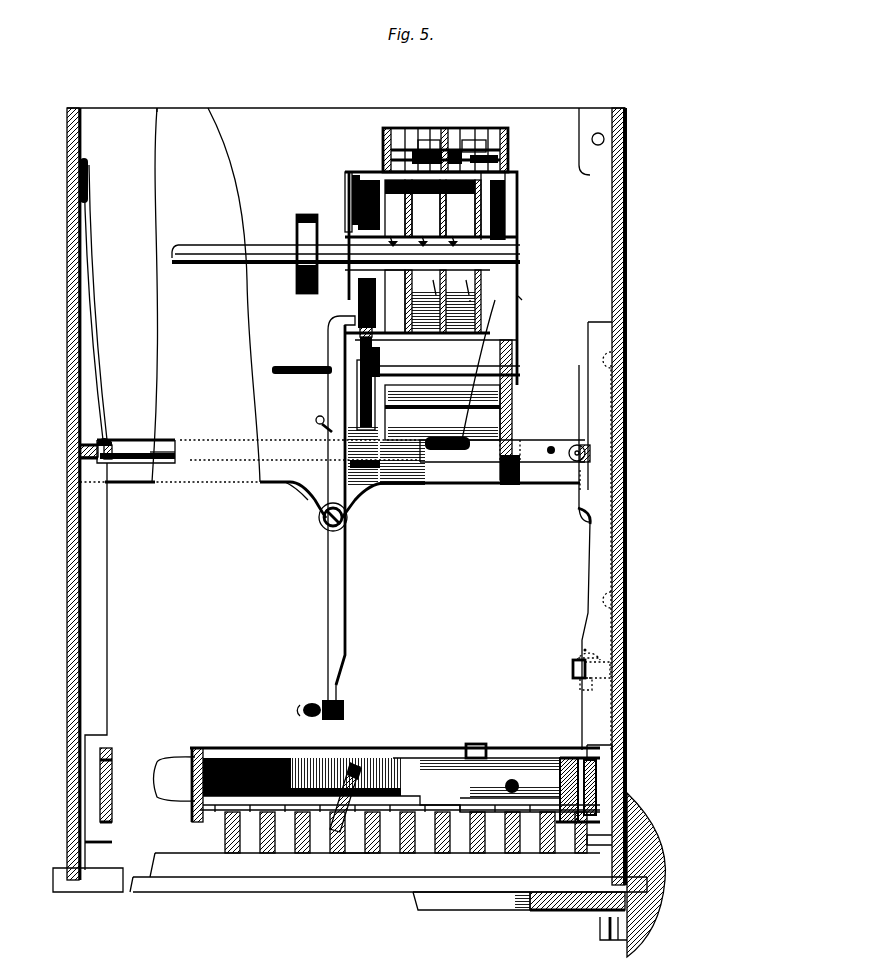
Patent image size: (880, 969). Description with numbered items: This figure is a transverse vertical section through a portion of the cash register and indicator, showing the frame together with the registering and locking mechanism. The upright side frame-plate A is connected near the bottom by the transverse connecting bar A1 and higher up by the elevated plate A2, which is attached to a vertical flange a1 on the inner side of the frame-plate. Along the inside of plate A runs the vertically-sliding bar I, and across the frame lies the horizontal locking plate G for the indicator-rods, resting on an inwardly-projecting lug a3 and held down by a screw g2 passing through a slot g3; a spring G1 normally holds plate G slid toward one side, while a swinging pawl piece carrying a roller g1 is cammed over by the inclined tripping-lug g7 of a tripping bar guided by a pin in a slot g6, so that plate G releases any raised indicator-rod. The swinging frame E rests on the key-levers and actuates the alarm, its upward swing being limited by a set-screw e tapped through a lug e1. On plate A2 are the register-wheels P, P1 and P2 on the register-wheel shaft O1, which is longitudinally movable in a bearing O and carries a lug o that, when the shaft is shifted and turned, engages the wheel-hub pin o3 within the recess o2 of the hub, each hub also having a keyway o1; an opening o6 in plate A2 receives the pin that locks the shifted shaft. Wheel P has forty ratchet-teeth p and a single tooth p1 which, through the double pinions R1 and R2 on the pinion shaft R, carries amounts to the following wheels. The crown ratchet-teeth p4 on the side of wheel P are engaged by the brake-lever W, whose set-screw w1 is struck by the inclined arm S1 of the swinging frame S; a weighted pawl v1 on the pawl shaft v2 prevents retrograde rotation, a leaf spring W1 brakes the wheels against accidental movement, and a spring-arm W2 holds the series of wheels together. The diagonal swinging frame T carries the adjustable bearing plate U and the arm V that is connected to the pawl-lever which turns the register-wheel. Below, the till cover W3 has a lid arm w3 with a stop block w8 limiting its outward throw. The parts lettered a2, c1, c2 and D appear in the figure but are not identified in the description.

The side frame-plate A is at (635, 676).
The transverse connecting bar A1 is at (350, 880).
The elevated plate A2 is at (234, 140).
The vertically-sliding bar I is at (100, 592).
The spring G1 is at (97, 332).
The locking plate G is at (162, 442).
The roller g1 is at (158, 458).
The screw g2 is at (110, 432).
The slot g3 is at (118, 447).
The slot g6 is at (425, 445).
The tripping-lug g7 is at (578, 508).
The lug a3 is at (80, 450).
The arm a2 is at (485, 468).
The vertical flange a1 is at (390, 578).
The bearing O is at (307, 243).
The register-wheel shaft O1 is at (268, 248).
The lug o is at (418, 250).
The keyway o1 is at (429, 230).
The recess o2 is at (443, 284).
The wheel-hub pin o3 is at (469, 295).
The opening in plate o6 is at (522, 300).
The pinion shaft R is at (400, 140).
The double pinion R1 is at (428, 142).
The double pinion R2 is at (470, 142).
The register-wheel P is at (432, 326).
The register-wheel P1 is at (426, 208).
The register-wheel P2 is at (460, 208).
The ratchet-teeth p is at (368, 178).
The single tooth p1 is at (364, 328).
The crown ratchet-teeth p4 is at (358, 300).
The weighted pawl v1 is at (380, 352).
The pawl shaft v2 is at (302, 360).
The brake-lever W is at (337, 635).
The leaf spring W1 is at (442, 412).
The spring-arm W2 is at (478, 370).
The till cover W3 is at (468, 898).
The set-screw w1 is at (345, 710).
The lid arm w3 is at (570, 905).
The stop block w8 is at (606, 938).
The arm V is at (395, 741).
The bearing plate U is at (377, 784).
The swinging frame S is at (197, 748).
The inclined arm S1 is at (346, 797).
The diagonal swinging frame T is at (556, 795).
The swinging frame E is at (112, 797).
The bracket c1 is at (112, 842).
The bracket upper c2 is at (600, 756).
The key block D is at (375, 841).
The set-screw e is at (580, 684).
The lug e1 is at (573, 667).